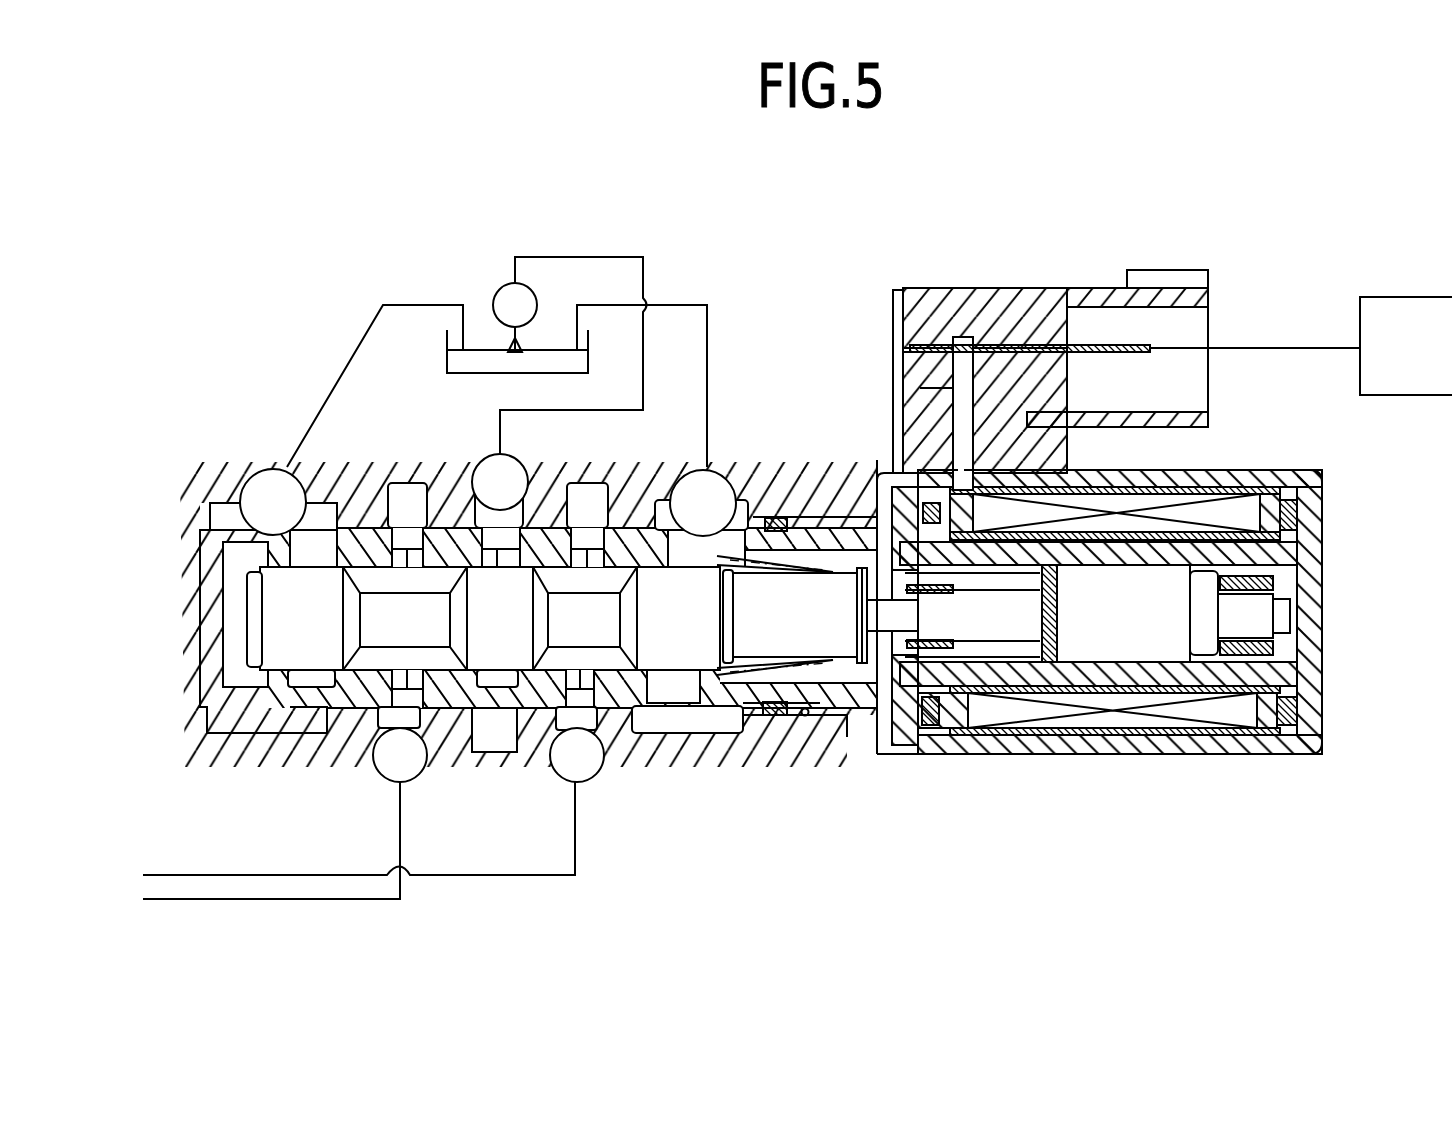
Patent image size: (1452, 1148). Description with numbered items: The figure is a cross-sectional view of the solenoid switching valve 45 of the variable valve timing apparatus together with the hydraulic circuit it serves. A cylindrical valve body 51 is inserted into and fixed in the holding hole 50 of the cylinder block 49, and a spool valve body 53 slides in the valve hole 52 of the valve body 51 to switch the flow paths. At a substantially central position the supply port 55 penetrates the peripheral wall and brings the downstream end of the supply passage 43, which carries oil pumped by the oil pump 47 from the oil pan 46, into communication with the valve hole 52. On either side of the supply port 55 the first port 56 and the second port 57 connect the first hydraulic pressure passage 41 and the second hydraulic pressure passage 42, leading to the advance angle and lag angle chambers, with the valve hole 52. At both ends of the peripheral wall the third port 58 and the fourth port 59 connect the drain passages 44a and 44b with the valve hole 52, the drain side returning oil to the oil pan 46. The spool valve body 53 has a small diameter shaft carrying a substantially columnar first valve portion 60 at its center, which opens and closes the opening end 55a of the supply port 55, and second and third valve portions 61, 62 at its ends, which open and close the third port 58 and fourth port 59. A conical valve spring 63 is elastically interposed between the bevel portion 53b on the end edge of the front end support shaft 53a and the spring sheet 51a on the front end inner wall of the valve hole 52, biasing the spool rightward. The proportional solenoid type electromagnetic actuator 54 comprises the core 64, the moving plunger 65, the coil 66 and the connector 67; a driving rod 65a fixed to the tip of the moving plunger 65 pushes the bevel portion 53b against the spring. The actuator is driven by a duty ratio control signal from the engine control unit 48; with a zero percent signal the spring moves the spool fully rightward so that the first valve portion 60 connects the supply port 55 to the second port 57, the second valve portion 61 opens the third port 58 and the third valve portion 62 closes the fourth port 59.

The first hydraulic pressure passage 41 is at (200, 875).
The second hydraulic pressure passage 42 is at (277, 899).
The supply passage 43 is at (618, 257).
The drain passage 44a is at (711, 350).
The drain passage 44b is at (340, 380).
The solenoid switching valve 45 is at (210, 563).
The oil pan 46 is at (447, 355).
The oil pump 47 is at (497, 291).
The engine control unit 48 is at (1413, 297).
The cylinder block 49 is at (848, 758).
The holding hole 50 is at (745, 733).
The valve body 51 is at (662, 648).
The spring sheet 51a is at (725, 585).
The valve hole 52 is at (557, 650).
The spool valve body 53 is at (375, 652).
The front end support shaft 53a is at (830, 595).
The bevel portion 53b is at (856, 624).
The electromagnetic actuator 54 is at (1240, 760).
The supply port 55 is at (480, 458).
The opening end 55a is at (465, 650).
The first port 56 is at (592, 556).
The second port 57 is at (403, 555).
The third port 58 is at (725, 478).
The fourth port 59 is at (315, 545).
The first valve portion 60 is at (514, 596).
The second valve portion 61 is at (612, 692).
The third valve portion 62 is at (277, 630).
The valve spring 63 is at (733, 735).
The core 64 is at (1018, 660).
The moving plunger 65 is at (1172, 640).
The driving rod 65a is at (966, 667).
The coil 66 is at (1115, 717).
The connector 67 is at (1098, 325).